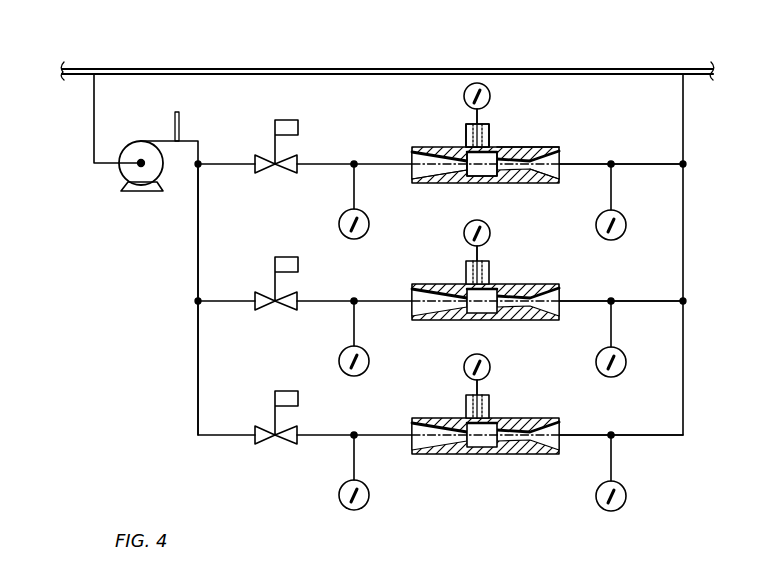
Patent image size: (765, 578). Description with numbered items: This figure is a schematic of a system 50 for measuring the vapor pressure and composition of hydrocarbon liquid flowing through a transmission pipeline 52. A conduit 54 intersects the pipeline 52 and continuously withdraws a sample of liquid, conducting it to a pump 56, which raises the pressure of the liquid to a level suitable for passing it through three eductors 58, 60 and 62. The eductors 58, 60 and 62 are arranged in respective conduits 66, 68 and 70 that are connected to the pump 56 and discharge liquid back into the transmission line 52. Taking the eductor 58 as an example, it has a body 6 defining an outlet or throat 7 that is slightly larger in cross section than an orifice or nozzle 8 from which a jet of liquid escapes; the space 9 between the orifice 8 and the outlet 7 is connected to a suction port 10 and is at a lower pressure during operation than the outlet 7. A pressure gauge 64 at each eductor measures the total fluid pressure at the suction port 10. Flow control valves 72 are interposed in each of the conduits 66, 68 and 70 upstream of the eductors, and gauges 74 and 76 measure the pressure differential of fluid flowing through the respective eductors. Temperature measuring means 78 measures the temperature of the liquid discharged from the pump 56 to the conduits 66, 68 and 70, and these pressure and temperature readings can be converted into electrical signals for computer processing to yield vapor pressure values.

The body 6 is at (500, 147).
The outlet or throat 7 is at (528, 179).
The orifice or nozzle 8 is at (471, 183).
The space 9 is at (488, 178).
The suction port 10 is at (466, 131).
The system 50 is at (147, 338).
The transmission pipeline 52 is at (515, 69).
The conduit 54 is at (94, 150).
The pump 56 is at (120, 172).
The eductor 58 is at (529, 147).
The eductor 60 is at (522, 284).
The eductor 62 is at (522, 418).
The pressure gauge 64 is at (464, 96).
The conduit 66 is at (664, 164).
The conduit 68 is at (634, 303).
The conduit 70 is at (655, 436).
The flow control valve 72 is at (280, 170).
The pressure gauge 74 is at (362, 239).
The pressure gauge 76 is at (614, 242).
The temperature measuring means 78 is at (172, 118).